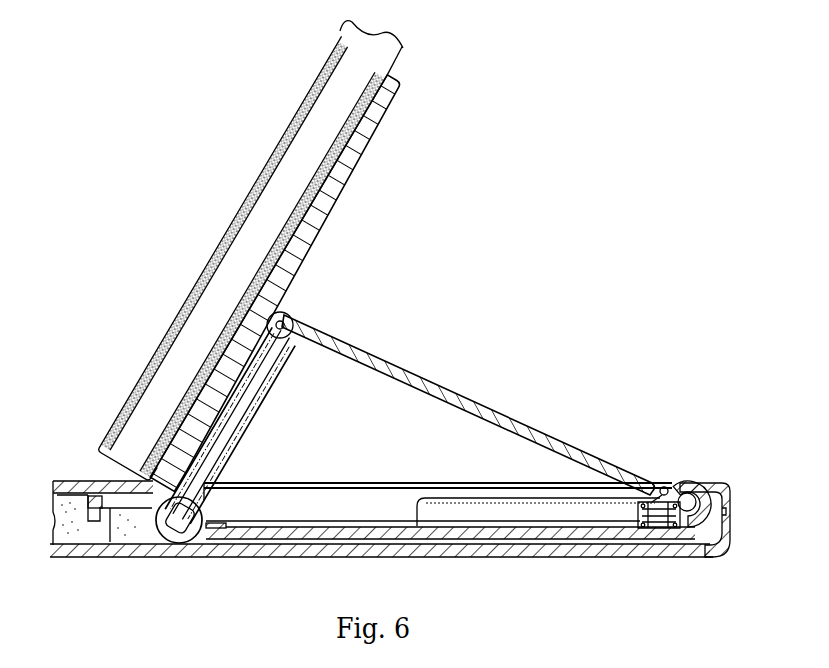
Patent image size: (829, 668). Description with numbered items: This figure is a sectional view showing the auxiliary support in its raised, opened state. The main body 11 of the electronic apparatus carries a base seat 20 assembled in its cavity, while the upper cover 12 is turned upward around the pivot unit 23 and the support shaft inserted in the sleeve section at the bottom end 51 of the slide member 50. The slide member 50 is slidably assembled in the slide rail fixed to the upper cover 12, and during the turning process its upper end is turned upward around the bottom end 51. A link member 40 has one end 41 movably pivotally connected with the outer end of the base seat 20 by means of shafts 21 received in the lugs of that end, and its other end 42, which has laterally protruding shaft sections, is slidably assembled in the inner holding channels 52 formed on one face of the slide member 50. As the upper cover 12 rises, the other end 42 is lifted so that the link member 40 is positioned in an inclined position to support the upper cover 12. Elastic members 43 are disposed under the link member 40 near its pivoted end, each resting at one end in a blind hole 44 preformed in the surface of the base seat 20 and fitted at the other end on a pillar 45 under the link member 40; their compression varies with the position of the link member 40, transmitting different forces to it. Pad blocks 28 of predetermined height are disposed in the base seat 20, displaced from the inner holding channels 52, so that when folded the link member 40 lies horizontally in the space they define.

The main body 11 is at (302, 557).
The upper cover 12 is at (213, 257).
The base seat 20 is at (328, 523).
The shaft 21 is at (727, 529).
The pivot unit 23 is at (160, 555).
The pad block 28 is at (498, 488).
The link member 40 is at (453, 392).
The end of the link member 41 is at (694, 487).
The other end of the link member 42 is at (293, 313).
The elastic member 43 is at (645, 552).
The blind hole 44 is at (610, 552).
The pillar 45 is at (655, 485).
The slide member 50 is at (337, 202).
The bottom end of the slide member 51 is at (192, 555).
The inner holding channel 52 is at (248, 397).